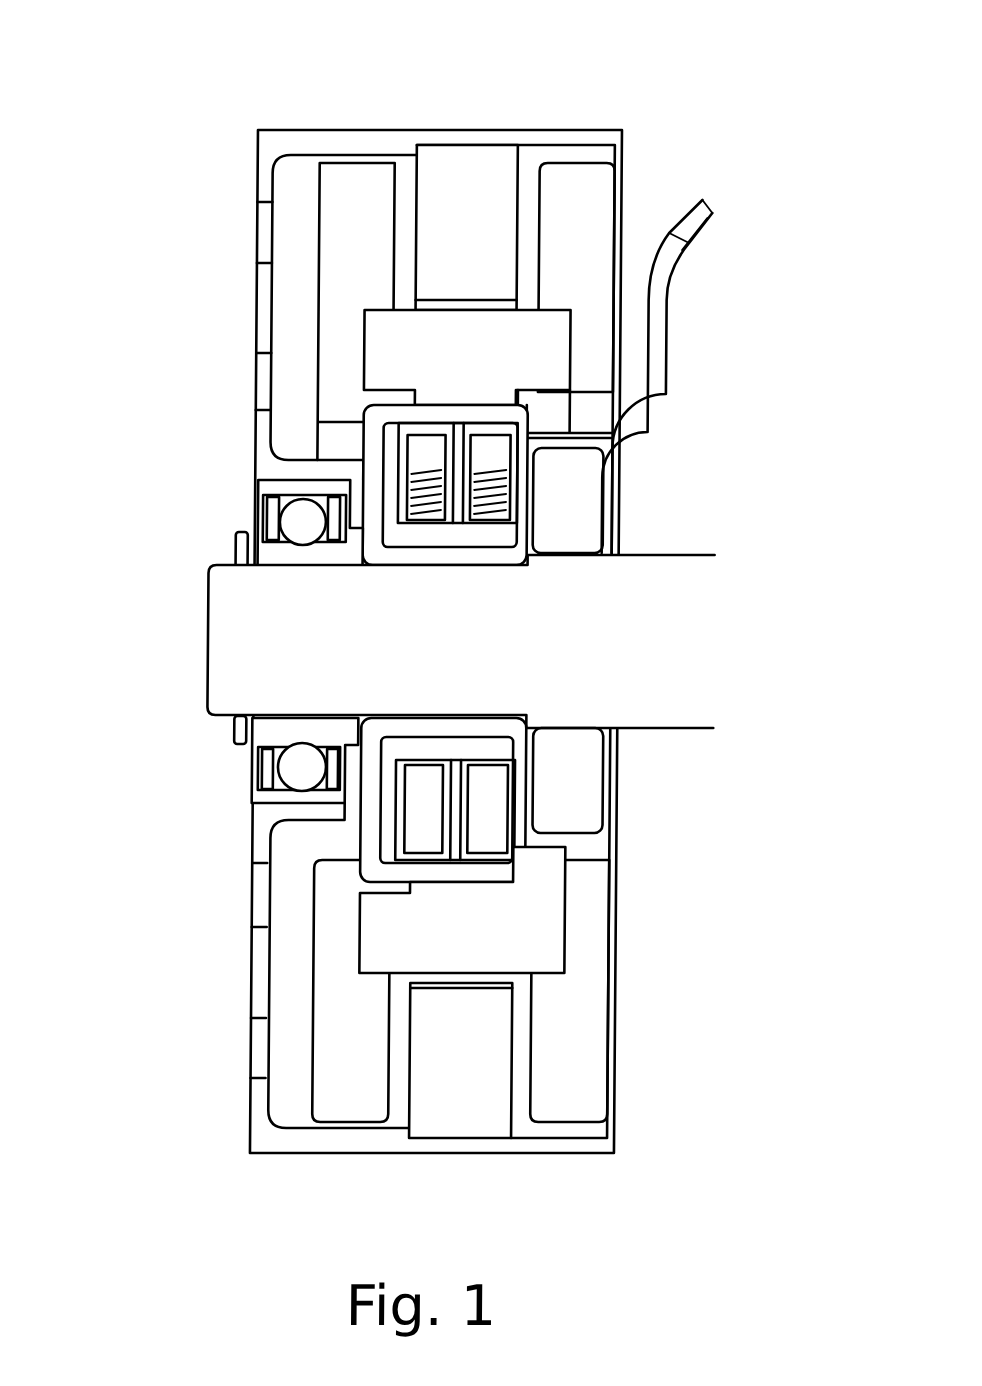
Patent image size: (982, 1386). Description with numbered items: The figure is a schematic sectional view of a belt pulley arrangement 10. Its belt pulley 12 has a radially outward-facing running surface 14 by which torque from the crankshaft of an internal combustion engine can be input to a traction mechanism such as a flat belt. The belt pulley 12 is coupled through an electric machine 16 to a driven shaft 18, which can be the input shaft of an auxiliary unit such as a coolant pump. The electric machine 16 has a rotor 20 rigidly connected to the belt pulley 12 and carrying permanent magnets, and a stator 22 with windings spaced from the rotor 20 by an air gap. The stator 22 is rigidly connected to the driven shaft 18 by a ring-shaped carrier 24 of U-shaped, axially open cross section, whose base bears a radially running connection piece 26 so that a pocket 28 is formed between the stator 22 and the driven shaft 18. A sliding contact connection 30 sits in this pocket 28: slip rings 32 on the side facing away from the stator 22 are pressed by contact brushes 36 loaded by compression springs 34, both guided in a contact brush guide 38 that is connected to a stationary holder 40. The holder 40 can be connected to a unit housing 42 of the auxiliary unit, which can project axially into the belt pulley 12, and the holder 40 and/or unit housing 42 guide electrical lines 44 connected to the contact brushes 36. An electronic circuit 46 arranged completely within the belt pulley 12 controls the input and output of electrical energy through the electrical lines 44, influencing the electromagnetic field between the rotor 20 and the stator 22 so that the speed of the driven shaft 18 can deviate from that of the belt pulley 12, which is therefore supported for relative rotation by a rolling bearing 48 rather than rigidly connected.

The belt pulley arrangement 10 is at (246, 93).
The belt pulley 12 is at (271, 1141).
The running surface 14 is at (438, 1153).
The electric machine 16 is at (558, 877).
The driven shaft 18 is at (252, 645).
The rotor 20 is at (453, 233).
The stator 22 is at (430, 349).
The carrier 24 is at (390, 413).
The connection piece 26 is at (375, 803).
The pocket 28 is at (388, 828).
The sliding contact connection 30 is at (431, 809).
The slip rings 32 is at (487, 427).
The compression springs 34 is at (488, 491).
The contact brushes 36 is at (487, 450).
The contact brush guide 38 is at (450, 511).
The holder 40 is at (530, 795).
The unit housing 42 is at (577, 769).
The electrical lines 44 is at (634, 429).
The electronic circuit 46 is at (579, 197).
The rolling bearing 48 is at (297, 522).